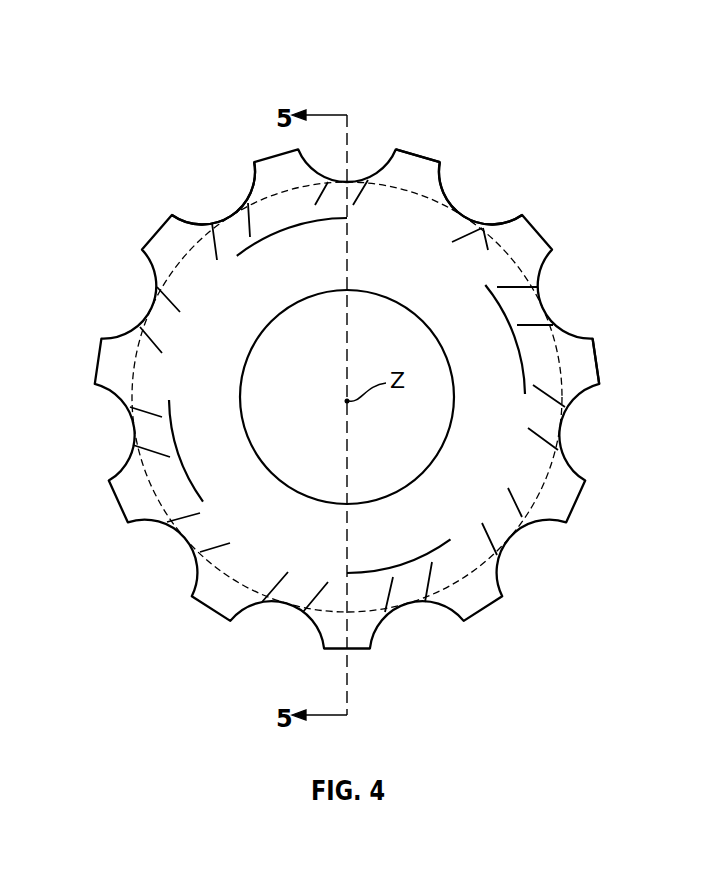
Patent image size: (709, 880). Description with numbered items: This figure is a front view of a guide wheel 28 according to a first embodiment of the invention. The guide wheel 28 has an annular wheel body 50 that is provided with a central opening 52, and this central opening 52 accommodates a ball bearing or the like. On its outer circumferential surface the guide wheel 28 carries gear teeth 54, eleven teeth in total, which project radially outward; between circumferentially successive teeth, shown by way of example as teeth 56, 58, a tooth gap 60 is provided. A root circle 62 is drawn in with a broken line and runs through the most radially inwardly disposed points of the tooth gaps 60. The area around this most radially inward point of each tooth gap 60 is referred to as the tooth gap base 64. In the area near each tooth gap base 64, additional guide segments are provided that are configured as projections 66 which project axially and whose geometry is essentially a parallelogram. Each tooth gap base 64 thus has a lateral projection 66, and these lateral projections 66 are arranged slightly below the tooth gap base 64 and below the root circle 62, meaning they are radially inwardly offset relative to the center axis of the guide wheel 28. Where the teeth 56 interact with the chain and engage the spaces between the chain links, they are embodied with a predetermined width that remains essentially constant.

The guide wheel 28 is at (406, 651).
The annular wheel body 50 is at (503, 222).
The central opening 52 is at (455, 400).
The gear teeth 54 is at (525, 551).
The tooth 56 is at (417, 157).
The tooth 58 is at (583, 360).
The tooth gap 60 is at (461, 214).
The root circle 62 is at (204, 223).
The tooth gap base 64 is at (150, 308).
The projections 66 is at (143, 427).